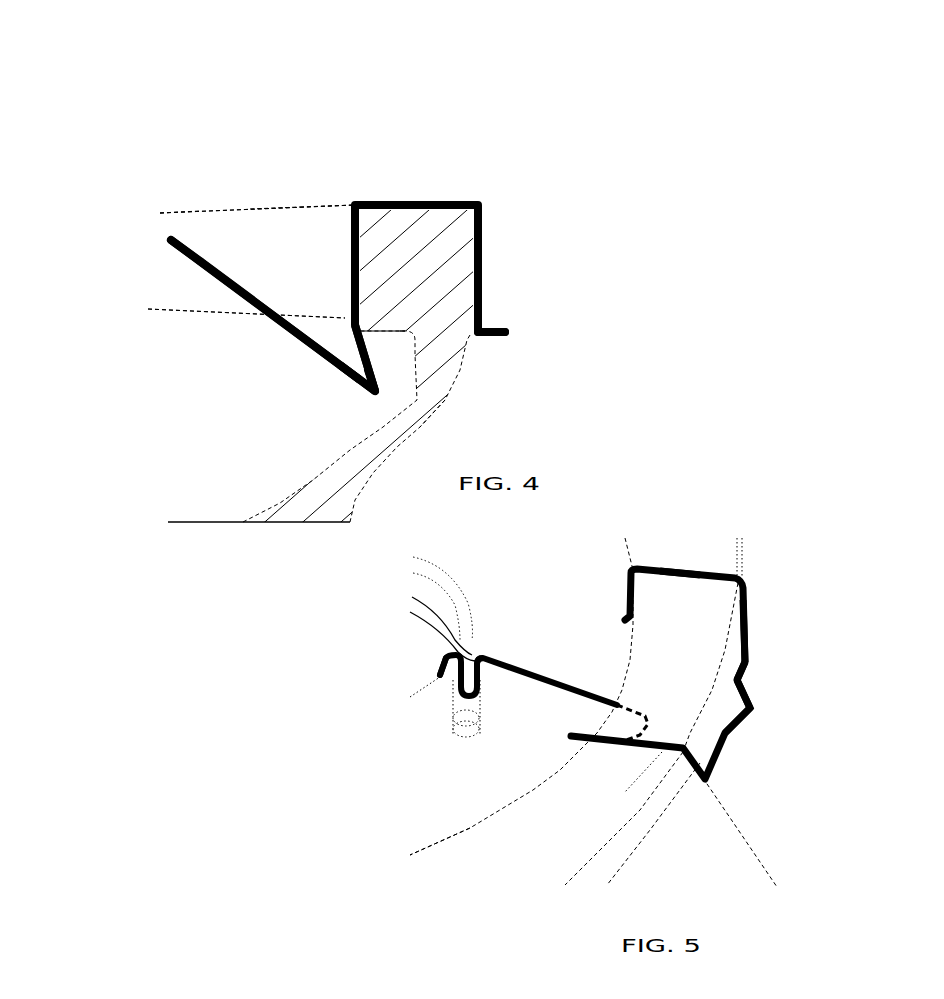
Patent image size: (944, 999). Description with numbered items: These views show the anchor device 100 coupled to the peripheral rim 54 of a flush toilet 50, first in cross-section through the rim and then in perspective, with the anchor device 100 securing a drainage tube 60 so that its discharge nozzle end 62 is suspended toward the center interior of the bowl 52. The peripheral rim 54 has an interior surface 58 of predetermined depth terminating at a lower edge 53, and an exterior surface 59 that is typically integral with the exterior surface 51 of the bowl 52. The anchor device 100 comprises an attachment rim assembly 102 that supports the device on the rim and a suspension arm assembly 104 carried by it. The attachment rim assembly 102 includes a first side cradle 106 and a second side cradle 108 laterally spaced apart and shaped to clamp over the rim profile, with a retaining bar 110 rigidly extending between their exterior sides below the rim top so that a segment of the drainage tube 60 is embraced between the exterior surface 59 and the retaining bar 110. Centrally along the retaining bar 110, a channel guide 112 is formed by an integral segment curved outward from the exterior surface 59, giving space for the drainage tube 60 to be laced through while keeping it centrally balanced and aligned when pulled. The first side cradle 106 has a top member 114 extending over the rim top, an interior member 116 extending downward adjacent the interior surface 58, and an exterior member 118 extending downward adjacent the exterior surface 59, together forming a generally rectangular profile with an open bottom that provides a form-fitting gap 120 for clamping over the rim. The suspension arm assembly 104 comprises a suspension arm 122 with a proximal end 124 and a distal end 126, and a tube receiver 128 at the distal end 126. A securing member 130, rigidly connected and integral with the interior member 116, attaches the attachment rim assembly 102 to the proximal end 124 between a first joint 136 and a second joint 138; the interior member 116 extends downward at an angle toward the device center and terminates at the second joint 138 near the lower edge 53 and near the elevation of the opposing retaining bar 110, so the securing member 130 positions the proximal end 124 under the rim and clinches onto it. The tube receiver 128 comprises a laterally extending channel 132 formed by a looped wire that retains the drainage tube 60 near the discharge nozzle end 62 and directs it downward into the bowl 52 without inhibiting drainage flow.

In FIG. 4, the flush toilet 50 is at (198, 175).
In FIG. 5, the flush toilet 50 is at (390, 795).
In FIG. 4, the exterior surface of the bowl 51 is at (458, 380).
In FIG. 4, the bowl 52 is at (155, 375).
In FIG. 5, the bowl 52 is at (560, 590).
In FIG. 4, the lower edge 53 is at (367, 330).
In FIG. 4, the peripheral rim 54 is at (312, 210).
In FIG. 5, the peripheral rim 54 is at (740, 556).
In FIG. 4, the interior surface 58 is at (290, 262).
In FIG. 4, the exterior surface 59 is at (482, 258).
In FIG. 5, the exterior surface 59 is at (731, 641).
In FIG. 5, the drainage tube 60 is at (440, 598).
In FIG. 5, the discharge nozzle end 62 is at (445, 703).
In FIG. 4, the anchor device 100 is at (354, 291).
In FIG. 4, the attachment rim assembly 102 is at (354, 319).
In FIG. 5, the attachment rim assembly 102 is at (579, 692).
In FIG. 4, the suspension arm assembly 104 is at (263, 325).
In FIG. 4, the first side cradle 106 is at (503, 295).
In FIG. 5, the first side cradle 106 is at (640, 780).
In FIG. 5, the second side cradle 108 is at (695, 550).
In FIG. 5, the retaining bar 110 is at (747, 666).
In FIG. 4, the channel guide 112 is at (518, 333).
In FIG. 5, the channel guide 112 is at (764, 707).
In FIG. 4, the top member 114 is at (400, 200).
In FIG. 4, the interior member 116 is at (352, 250).
In FIG. 4, the exterior member 118 is at (483, 245).
In FIG. 4, the form-fitting gap 120 is at (433, 335).
In FIG. 4, the suspension arm 122 is at (300, 342).
In FIG. 5, the suspension arm 122 is at (462, 745).
In FIG. 4, the proximal end 124 is at (350, 393).
In FIG. 4, the distal end 126 is at (165, 212).
In FIG. 4, the tube receiver 128 is at (165, 240).
In FIG. 5, the tube receiver 128 is at (437, 663).
In FIG. 4, the securing member 130 is at (373, 363).
In FIG. 5, the channel 132 is at (480, 650).
In FIG. 4, the first joint 136 is at (375, 400).
In FIG. 4, the second joint 138 is at (342, 317).